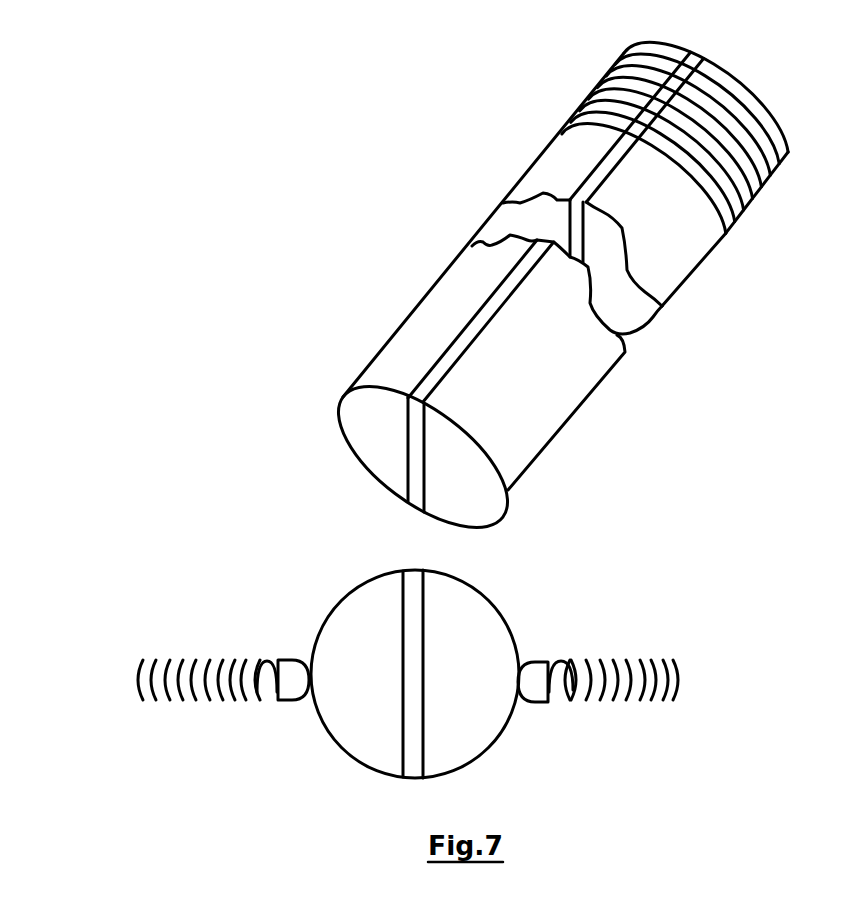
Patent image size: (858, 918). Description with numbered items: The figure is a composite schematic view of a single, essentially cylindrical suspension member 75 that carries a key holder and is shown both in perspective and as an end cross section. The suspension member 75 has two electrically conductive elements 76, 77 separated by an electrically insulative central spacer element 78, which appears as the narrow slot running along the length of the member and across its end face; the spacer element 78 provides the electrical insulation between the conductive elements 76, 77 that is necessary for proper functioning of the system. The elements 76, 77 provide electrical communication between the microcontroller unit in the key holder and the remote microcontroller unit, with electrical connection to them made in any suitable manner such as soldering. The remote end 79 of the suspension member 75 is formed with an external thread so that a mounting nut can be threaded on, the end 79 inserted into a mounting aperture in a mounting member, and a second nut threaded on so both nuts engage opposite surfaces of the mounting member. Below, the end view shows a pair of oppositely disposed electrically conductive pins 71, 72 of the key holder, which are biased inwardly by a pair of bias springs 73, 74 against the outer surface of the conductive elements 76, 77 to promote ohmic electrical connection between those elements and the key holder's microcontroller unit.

The electrically conductive pin 71 is at (292, 677).
The electrically conductive pin 72 is at (530, 677).
The bias spring 73 is at (197, 703).
The bias spring 74 is at (600, 703).
The suspension member 75 is at (405, 287).
The electrically conductive element 76 is at (395, 367).
The electrically conductive element 77 is at (560, 397).
The central spacer element 78 is at (417, 439).
The remote end 79 is at (752, 127).